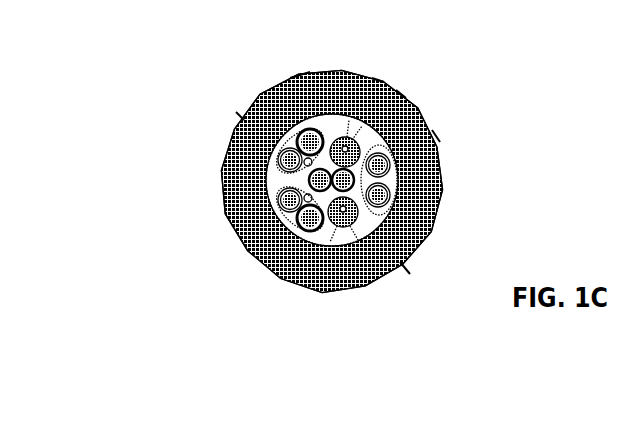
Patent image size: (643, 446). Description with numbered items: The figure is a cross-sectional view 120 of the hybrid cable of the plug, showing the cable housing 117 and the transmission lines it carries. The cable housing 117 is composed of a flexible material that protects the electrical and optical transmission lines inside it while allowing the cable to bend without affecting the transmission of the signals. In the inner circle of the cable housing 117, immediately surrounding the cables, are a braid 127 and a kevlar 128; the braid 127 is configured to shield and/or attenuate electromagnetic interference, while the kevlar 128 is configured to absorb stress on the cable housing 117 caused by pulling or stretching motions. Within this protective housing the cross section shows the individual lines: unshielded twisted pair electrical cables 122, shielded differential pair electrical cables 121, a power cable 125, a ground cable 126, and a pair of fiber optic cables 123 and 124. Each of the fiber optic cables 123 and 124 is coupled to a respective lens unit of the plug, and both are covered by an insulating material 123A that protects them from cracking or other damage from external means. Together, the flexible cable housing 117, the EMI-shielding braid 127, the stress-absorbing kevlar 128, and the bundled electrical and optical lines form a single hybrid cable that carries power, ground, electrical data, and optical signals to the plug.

The cable housing 117 is at (302, 72).
The cross-sectional view 120 is at (342, 33).
The shielded differential pair (SDP) electrical cables 121 is at (258, 263).
The unshielded twisted pair (UTP) electrical cables 122 is at (437, 135).
The fiber optic cable 123 is at (400, 92).
The insulating material 123A is at (377, 78).
The fiber optic cable 124 is at (382, 280).
The power cable 125 is at (353, 290).
The ground cable 126 is at (405, 268).
The braid 127 is at (405, 192).
The kevlar 128 is at (405, 203).